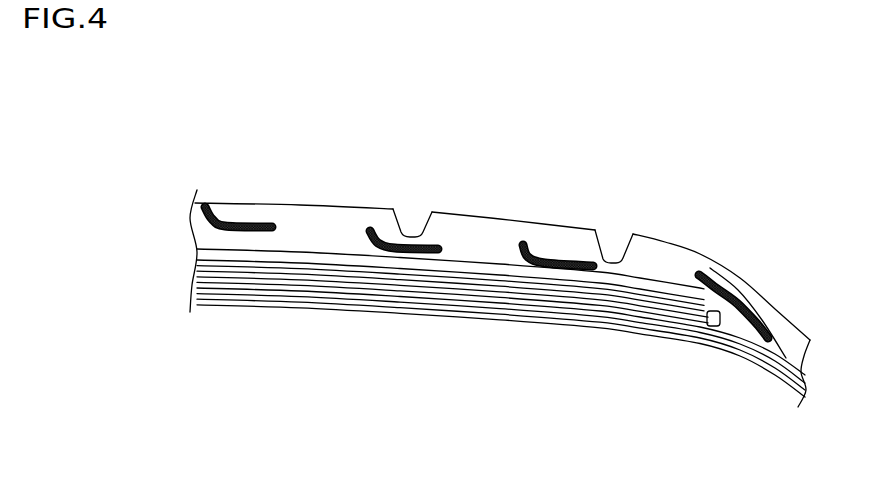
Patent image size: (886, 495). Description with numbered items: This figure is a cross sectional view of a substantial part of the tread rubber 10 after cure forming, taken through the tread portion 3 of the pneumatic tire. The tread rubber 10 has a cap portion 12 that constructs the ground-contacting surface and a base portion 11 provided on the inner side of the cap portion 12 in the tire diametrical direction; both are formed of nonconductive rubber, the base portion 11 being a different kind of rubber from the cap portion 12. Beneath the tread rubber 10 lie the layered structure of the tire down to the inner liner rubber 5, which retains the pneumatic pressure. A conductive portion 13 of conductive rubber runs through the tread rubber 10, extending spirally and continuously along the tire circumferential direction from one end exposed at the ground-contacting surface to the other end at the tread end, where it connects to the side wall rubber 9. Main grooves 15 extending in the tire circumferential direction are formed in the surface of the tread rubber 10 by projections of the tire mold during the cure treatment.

The tread portion 3 is at (328, 172).
The inner liner rubber 5 is at (670, 326).
The side wall rubber 9 is at (790, 342).
The tread rubber 10 is at (477, 211).
The base portion 11 is at (212, 257).
The cap portion 12 is at (210, 227).
The conductive portion 13 is at (551, 259).
The main groove 15 is at (401, 216).